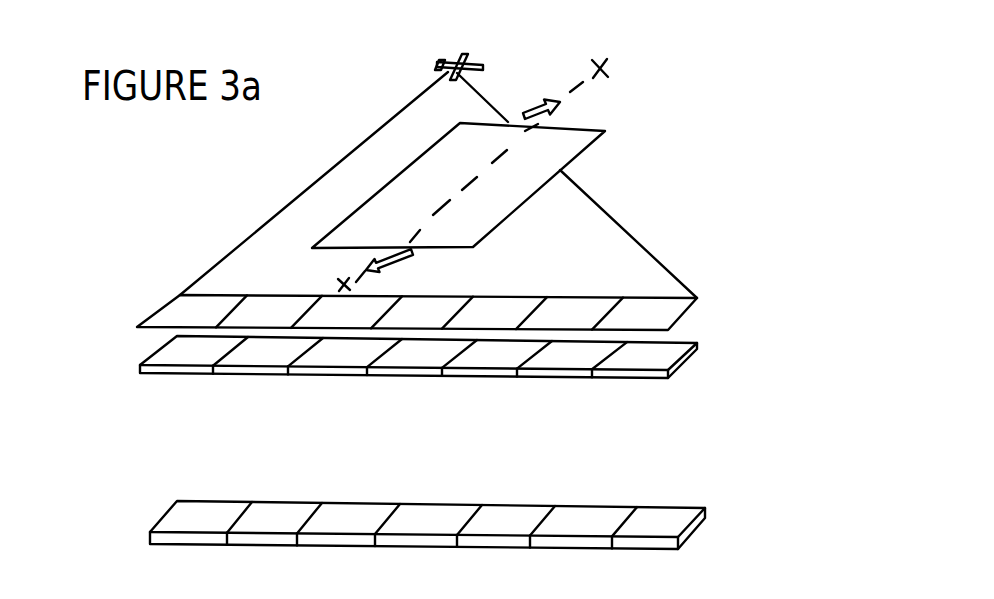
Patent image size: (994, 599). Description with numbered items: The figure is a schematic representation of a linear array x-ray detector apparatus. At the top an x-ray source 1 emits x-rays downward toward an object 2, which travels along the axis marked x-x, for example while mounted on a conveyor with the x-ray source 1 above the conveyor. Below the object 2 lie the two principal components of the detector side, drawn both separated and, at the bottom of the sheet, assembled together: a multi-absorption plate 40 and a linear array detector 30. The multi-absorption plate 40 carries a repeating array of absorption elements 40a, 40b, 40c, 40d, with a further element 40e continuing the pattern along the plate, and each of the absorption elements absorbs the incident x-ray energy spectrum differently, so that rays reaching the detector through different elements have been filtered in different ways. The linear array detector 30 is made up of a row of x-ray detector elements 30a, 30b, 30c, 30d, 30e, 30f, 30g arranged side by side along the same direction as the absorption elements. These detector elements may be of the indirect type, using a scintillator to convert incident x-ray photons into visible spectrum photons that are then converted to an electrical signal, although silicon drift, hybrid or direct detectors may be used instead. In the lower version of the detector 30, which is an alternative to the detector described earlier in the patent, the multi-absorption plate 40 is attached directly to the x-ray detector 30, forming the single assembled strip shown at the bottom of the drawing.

The x-ray source 1 is at (484, 64).
The object 2 is at (583, 137).
The linear array detector 30 is at (393, 460).
The x-ray detector element 30a is at (185, 375).
The x-ray detector element 30b is at (258, 375).
The x-ray detector element 30c is at (337, 376).
The x-ray detector element 30d is at (415, 376).
The x-ray detector element 30e is at (487, 377).
The x-ray detector element 30f is at (560, 377).
The x-ray detector element 30g is at (635, 378).
The multi-absorption plate 40 is at (418, 350).
The absorption element 40a is at (168, 310).
The absorption element 40b is at (262, 302).
The absorption element 40c is at (380, 295).
The absorption element 40d is at (438, 303).
The absorption element 40e is at (650, 308).